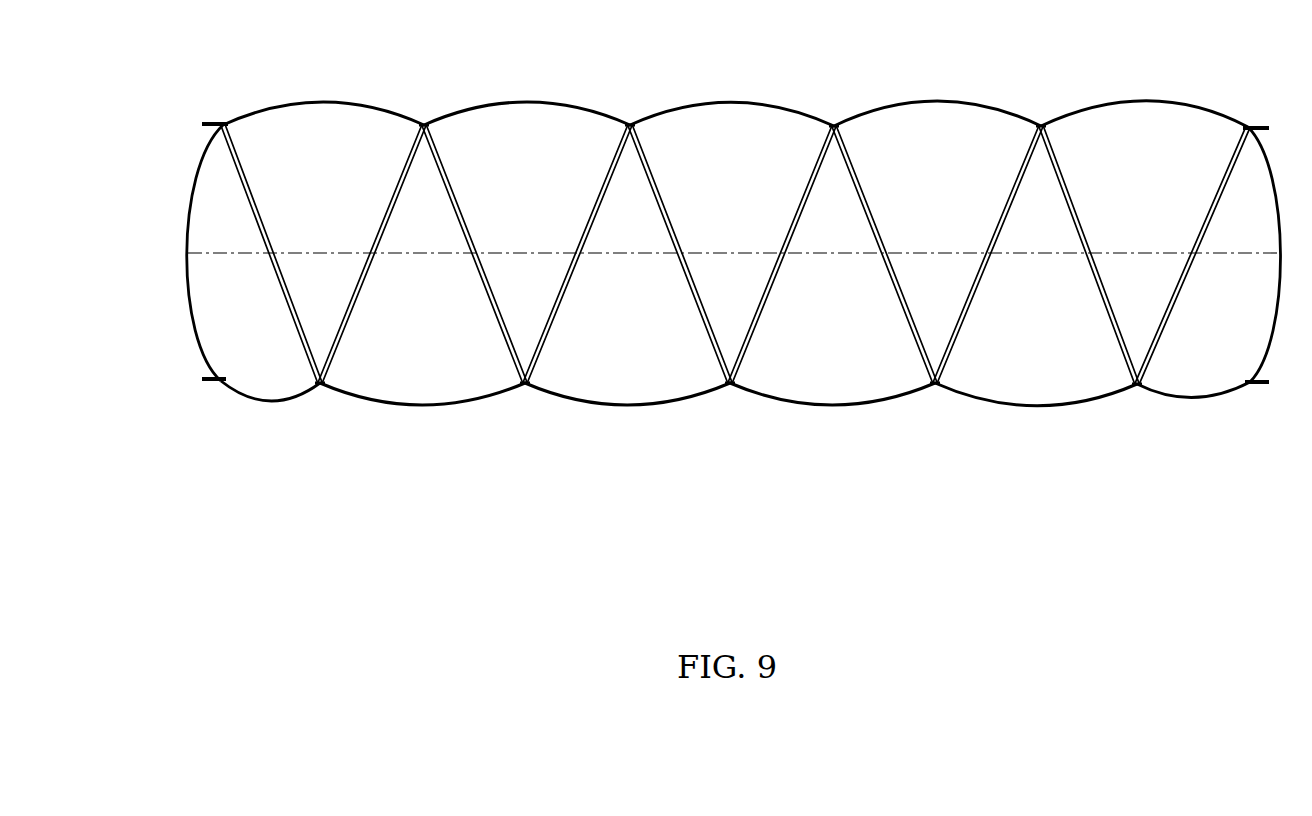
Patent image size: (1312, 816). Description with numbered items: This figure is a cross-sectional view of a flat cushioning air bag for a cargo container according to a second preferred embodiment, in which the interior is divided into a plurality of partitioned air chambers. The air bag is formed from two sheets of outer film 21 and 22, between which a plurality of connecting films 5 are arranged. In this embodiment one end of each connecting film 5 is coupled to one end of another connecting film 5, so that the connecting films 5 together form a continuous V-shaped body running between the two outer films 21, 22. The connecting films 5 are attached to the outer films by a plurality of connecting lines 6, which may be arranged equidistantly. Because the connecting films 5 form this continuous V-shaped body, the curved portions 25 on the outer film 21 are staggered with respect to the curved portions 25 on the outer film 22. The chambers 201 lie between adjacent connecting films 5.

The connecting film 5 is at (455, 192).
The connecting line 6 is at (424, 122).
The wave-shaped ring segments 201 is at (722, 140).
The outer film 21 is at (1249, 126).
The outer film 22 is at (242, 388).
The curved portion 25 is at (1147, 105).